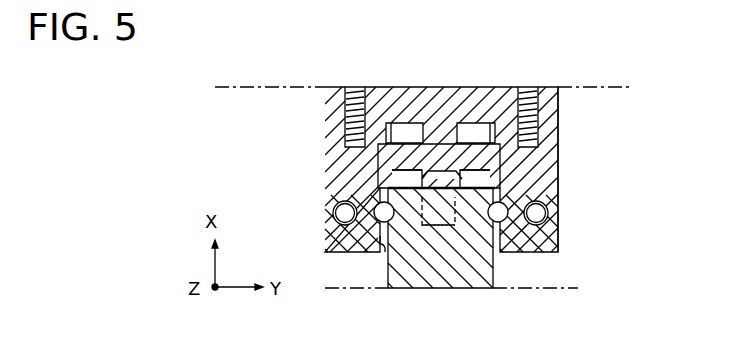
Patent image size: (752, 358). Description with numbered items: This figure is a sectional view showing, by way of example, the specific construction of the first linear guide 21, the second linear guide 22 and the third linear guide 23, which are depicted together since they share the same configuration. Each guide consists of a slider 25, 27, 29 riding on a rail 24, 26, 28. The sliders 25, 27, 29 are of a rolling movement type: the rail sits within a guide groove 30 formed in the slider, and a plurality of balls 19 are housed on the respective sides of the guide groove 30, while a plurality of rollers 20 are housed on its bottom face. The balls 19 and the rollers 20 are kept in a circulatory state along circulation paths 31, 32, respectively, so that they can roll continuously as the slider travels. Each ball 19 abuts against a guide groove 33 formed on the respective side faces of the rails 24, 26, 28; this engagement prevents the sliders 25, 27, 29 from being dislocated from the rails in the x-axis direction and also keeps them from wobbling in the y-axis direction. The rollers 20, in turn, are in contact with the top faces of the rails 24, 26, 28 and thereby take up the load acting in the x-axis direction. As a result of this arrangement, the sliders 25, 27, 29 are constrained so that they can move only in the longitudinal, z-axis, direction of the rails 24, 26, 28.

The ball 19 is at (340, 205).
The roller 20 is at (472, 173).
The first linear guide 21 is at (359, 169).
The second linear guide 22 is at (359, 169).
The third linear guide 23 is at (280, 136).
The rail 24 is at (414, 260).
The rail 26 is at (414, 260).
The rail 28 is at (407, 272).
The slider 25 is at (614, 169).
The slider 27 is at (614, 169).
The slider 29 is at (553, 124).
The guide groove 30 is at (383, 247).
The circulation path 31 is at (340, 218).
The circulation path 32 is at (417, 127).
The guide groove 33 is at (452, 236).